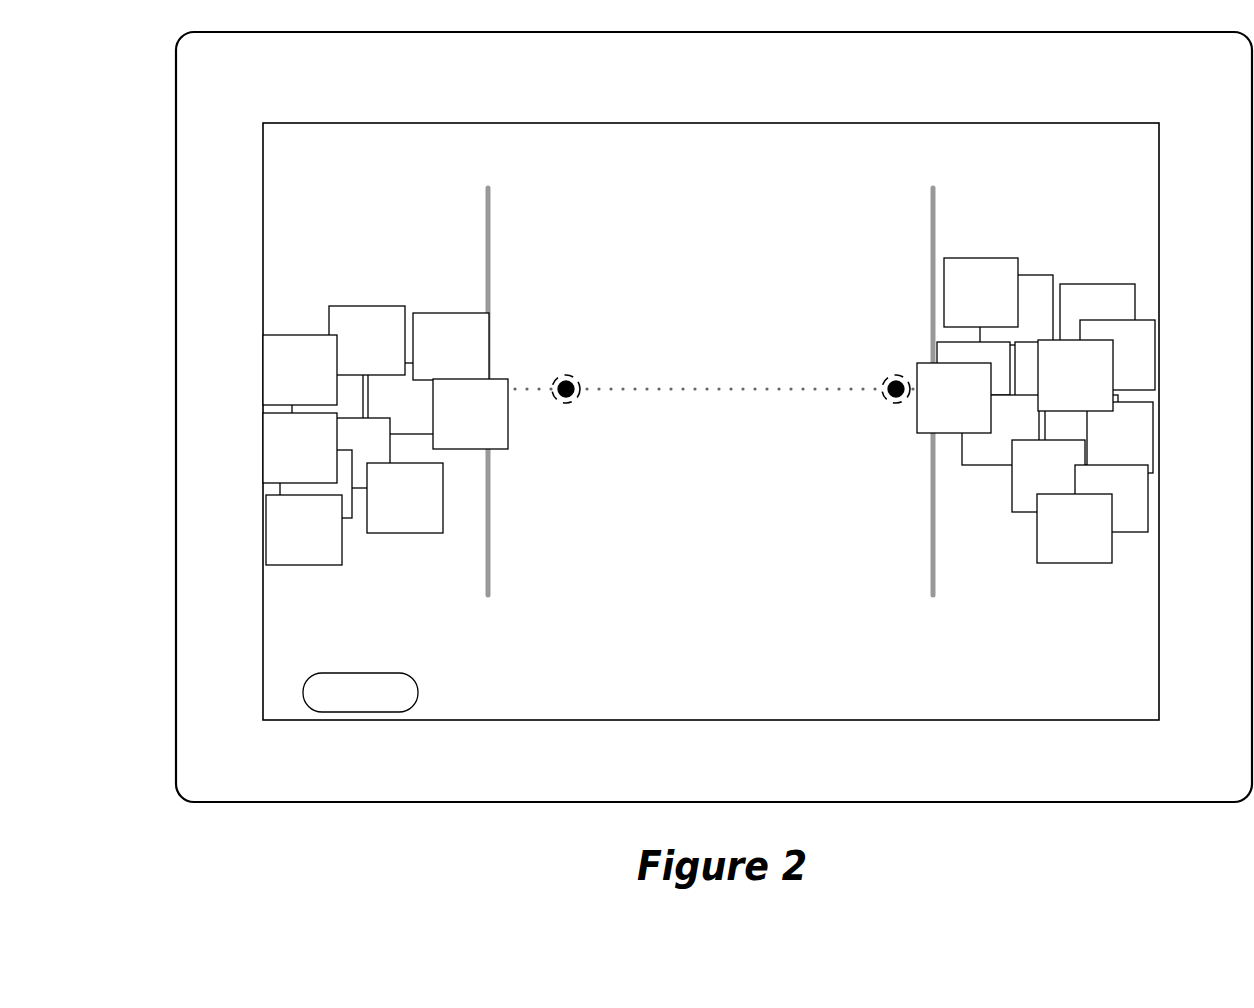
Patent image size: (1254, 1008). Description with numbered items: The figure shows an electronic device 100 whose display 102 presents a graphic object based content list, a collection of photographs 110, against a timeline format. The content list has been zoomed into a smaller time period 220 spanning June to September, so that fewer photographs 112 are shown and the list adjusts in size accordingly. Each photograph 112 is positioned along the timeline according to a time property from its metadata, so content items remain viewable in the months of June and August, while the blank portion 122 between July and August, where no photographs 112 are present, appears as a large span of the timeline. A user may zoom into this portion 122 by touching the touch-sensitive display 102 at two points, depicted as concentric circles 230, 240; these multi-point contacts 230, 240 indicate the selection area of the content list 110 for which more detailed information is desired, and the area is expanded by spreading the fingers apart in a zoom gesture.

The electronic device 100 is at (176, 90).
The display 102 is at (268, 710).
The collection of photographs 110 is at (237, 197).
The photograph 112 is at (447, 320).
The blank portion 122 is at (893, 303).
The smaller time period 220 is at (1159, 97).
The multi-point contact 230 is at (566, 374).
The multi-point contact 240 is at (893, 372).